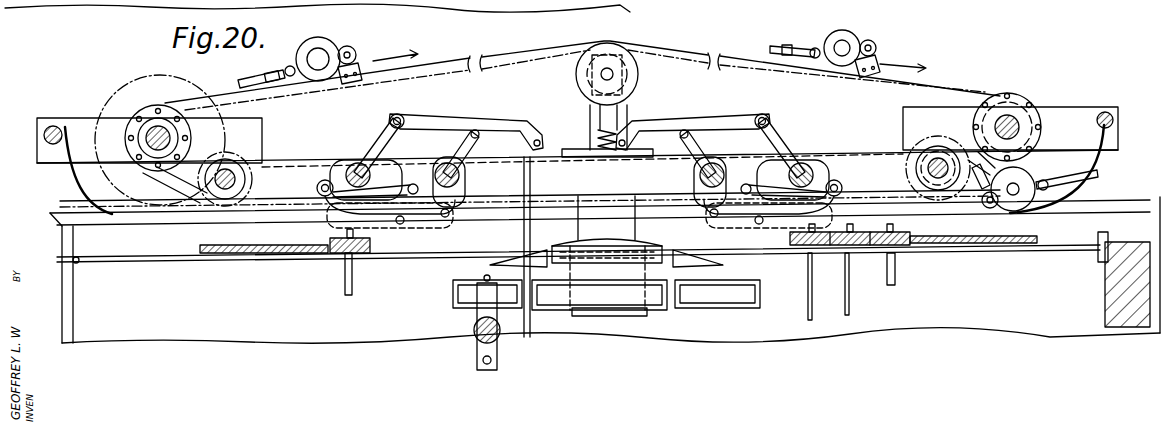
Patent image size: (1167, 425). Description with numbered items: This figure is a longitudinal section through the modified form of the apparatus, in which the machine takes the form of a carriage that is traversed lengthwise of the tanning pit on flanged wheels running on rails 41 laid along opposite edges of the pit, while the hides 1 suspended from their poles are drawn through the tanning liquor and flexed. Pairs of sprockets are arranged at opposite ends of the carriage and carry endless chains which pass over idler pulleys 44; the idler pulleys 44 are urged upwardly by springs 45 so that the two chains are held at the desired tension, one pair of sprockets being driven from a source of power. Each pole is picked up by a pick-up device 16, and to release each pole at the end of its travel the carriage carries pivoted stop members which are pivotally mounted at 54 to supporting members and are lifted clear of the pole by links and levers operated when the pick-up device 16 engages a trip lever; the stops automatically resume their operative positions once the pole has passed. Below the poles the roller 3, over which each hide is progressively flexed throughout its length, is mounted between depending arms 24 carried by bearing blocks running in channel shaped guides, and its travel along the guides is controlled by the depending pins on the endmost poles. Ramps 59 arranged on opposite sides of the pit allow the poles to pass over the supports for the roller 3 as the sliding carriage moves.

The hides 1 is at (846, 306).
The roller 3 is at (473, 338).
The pick-up device 16 is at (280, 72).
The depending arms 24 is at (498, 349).
The rails 41 is at (86, 222).
The idler pulleys 44 is at (577, 82).
The springs 45 is at (617, 135).
The pivot 54 is at (710, 216).
The ramps 59 is at (635, 262).